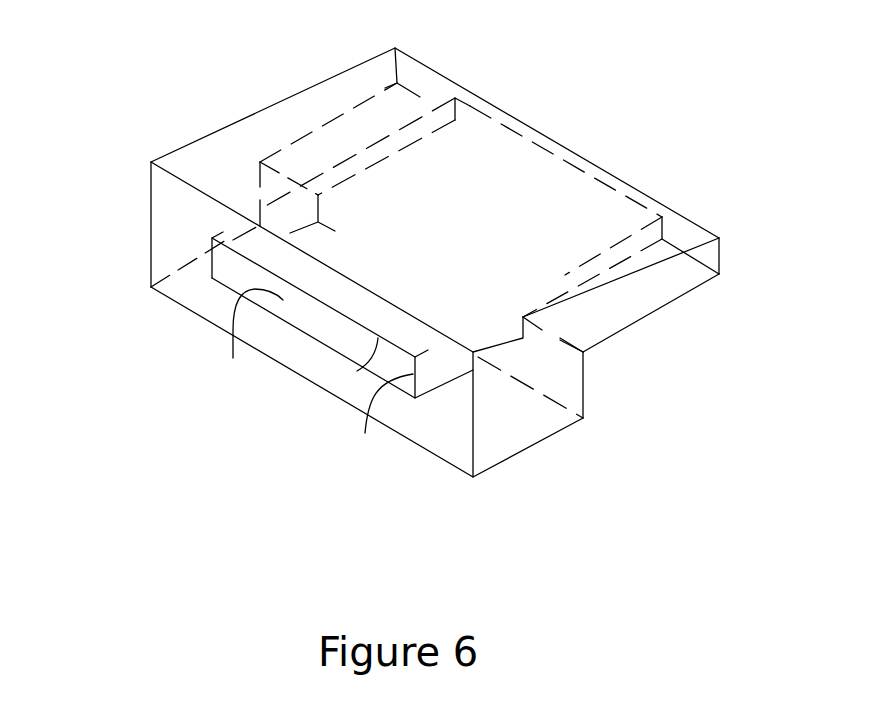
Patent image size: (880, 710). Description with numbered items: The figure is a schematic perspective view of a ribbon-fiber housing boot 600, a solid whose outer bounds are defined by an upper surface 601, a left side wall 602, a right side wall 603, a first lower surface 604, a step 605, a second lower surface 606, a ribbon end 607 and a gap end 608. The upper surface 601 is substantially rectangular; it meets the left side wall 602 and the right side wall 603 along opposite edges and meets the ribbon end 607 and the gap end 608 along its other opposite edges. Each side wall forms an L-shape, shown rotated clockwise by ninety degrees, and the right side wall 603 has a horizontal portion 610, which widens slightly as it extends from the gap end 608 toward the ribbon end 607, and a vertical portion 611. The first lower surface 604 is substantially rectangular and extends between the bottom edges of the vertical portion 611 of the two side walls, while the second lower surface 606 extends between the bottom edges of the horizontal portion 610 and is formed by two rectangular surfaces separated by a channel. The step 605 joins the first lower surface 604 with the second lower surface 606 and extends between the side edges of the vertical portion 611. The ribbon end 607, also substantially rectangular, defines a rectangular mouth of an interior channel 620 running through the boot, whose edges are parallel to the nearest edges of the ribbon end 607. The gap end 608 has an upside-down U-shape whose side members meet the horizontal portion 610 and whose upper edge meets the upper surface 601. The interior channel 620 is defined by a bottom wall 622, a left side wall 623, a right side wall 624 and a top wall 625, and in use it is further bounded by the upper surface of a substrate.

The housing boot 600 is at (102, 130).
The upper surface 601 is at (235, 145).
The left side wall 602 is at (151, 203).
The right side wall 603 is at (493, 437).
The first lower surface 604 is at (160, 298).
The step 605 is at (583, 373).
The second lower surface 606 is at (698, 293).
The ribbon end 607 is at (438, 432).
The gap end 608 is at (722, 256).
The horizontal portion 610 is at (640, 302).
The vertical portion 611 is at (522, 410).
The interior channel 620 is at (305, 315).
The bottom wall 622 is at (249, 344).
The left side wall 623 is at (223, 268).
The right side wall 624 is at (400, 415).
The top wall 625 is at (378, 338).